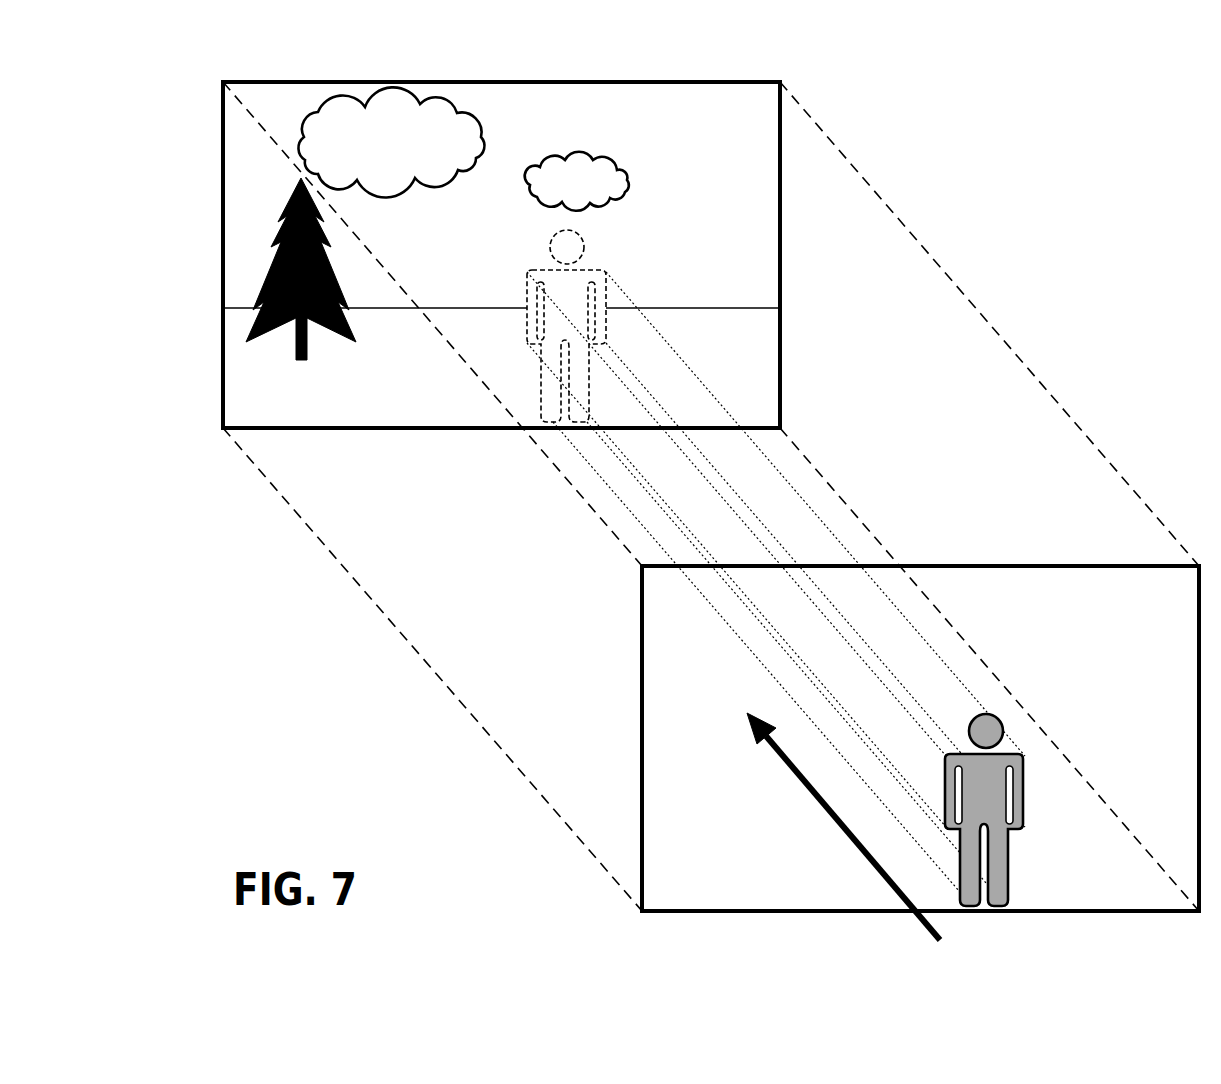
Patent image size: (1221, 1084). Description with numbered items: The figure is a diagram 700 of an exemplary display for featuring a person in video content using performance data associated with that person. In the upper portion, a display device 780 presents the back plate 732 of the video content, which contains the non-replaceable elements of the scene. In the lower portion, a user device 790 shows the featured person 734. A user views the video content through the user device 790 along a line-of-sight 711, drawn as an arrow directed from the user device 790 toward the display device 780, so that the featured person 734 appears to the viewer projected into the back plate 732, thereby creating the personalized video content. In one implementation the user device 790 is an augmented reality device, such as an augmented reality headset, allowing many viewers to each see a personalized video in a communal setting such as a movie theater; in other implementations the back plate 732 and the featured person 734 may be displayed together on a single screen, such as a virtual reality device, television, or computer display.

The diagram 700 is at (1018, 153).
The display device 780 is at (222, 224).
The back plate 732 is at (240, 374).
The user device 790 is at (641, 655).
The line-of-sight 711 is at (835, 826).
The featured person 734 is at (1005, 856).